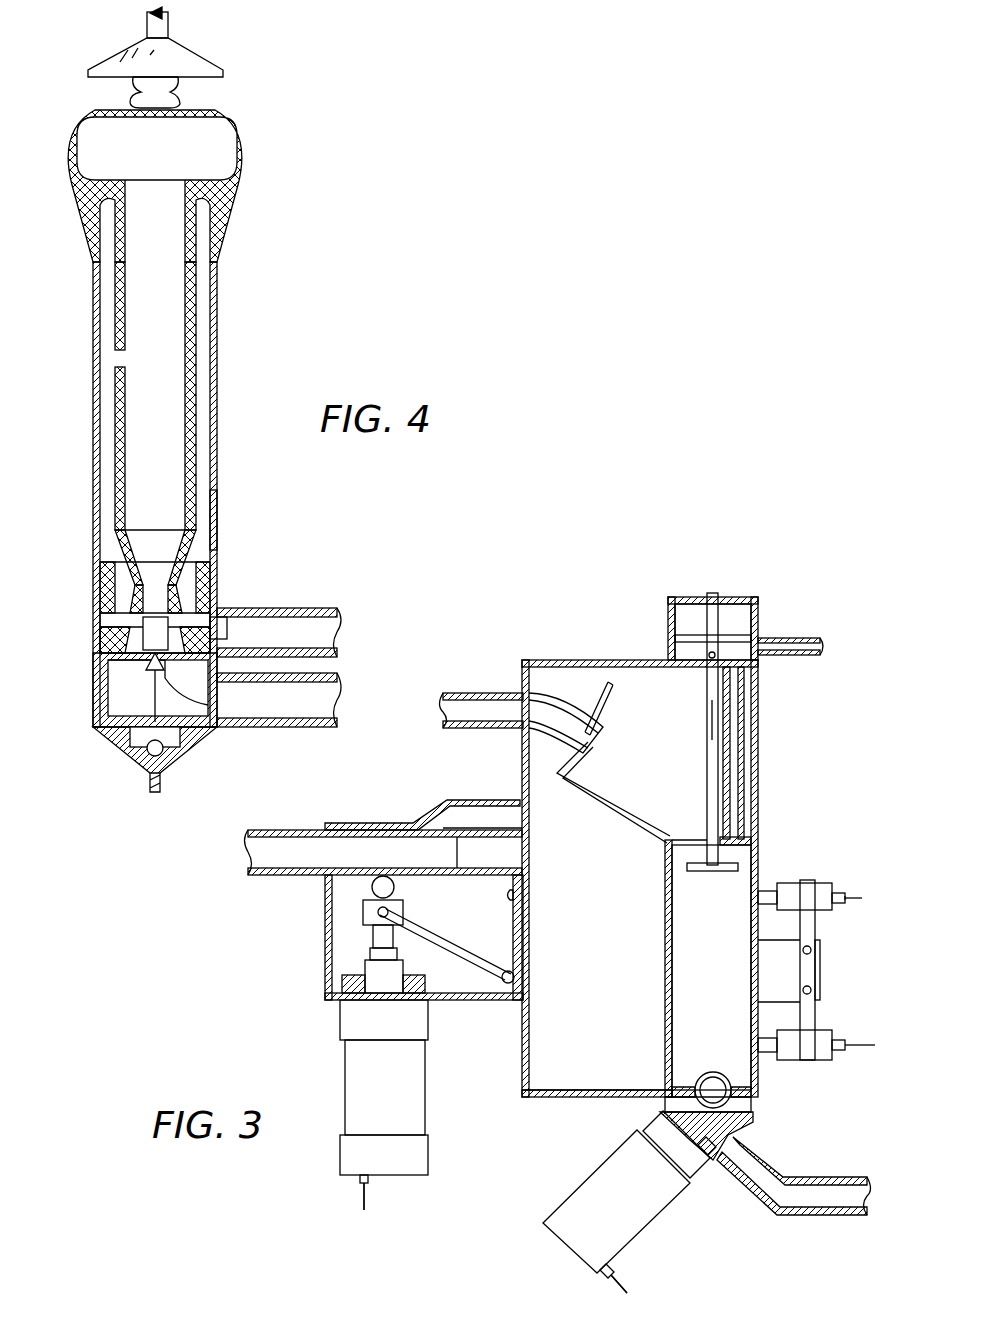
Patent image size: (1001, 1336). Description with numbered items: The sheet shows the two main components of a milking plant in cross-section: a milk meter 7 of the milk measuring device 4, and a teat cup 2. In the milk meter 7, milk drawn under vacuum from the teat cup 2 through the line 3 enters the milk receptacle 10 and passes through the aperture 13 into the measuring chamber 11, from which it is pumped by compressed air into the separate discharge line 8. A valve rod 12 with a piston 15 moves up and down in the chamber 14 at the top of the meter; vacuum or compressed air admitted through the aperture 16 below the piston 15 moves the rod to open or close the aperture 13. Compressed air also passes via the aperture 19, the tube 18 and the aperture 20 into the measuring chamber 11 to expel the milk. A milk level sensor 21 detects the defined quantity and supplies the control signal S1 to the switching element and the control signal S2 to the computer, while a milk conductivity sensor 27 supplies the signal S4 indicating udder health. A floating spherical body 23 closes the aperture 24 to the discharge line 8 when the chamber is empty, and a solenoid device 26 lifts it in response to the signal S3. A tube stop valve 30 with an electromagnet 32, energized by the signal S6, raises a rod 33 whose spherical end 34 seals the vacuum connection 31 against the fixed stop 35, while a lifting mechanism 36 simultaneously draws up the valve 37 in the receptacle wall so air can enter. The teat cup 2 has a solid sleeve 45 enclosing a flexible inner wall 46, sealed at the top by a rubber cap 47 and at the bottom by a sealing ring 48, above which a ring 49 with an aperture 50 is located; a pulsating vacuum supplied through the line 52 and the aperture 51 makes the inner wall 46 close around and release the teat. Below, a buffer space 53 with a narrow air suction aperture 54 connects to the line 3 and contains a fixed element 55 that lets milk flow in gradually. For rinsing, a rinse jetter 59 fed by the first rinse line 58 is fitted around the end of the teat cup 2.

In FIG. 4, the teat cup 2 is at (216, 362).
In FIG. 4, the line 3 is at (318, 708).
In FIG. 3, the line 3 is at (474, 705).
In FIG. 3, the milk measuring device 4 is at (572, 650).
In FIG. 3, the milk meter 7 is at (556, 1103).
In FIG. 3, the separate discharge line 8 is at (840, 1187).
In FIG. 3, the milk receptacle 10 is at (540, 1060).
In FIG. 3, the measuring chamber 11 is at (676, 976).
In FIG. 3, the valve rod 12 is at (706, 697).
In FIG. 3, the aperture 13 is at (702, 838).
In FIG. 3, the chamber 14 is at (688, 610).
In FIG. 3, the piston 15 is at (676, 626).
In FIG. 3, the aperture 16 is at (780, 638).
In FIG. 3, the tube 18 is at (741, 767).
In FIG. 3, the aperture 19 is at (740, 633).
In FIG. 3, the aperture 20 is at (742, 855).
In FIG. 3, the milk level sensor 21 is at (822, 882).
In FIG. 3, the spherical body 23 is at (703, 1073).
In FIG. 3, the aperture 24 is at (748, 1139).
In FIG. 3, the solenoid device 26 is at (580, 1192).
In FIG. 3, the milk conductivity sensor 27 is at (828, 1033).
In FIG. 3, the tube stop valve 30 is at (337, 972).
In FIG. 3, the vacuum connection 31 is at (282, 860).
In FIG. 3, the electromagnet 32 is at (410, 1113).
In FIG. 3, the rod 33 is at (372, 938).
In FIG. 3, the spherical end 34 is at (397, 888).
In FIG. 3, the fixed stop 35 is at (395, 797).
In FIG. 3, the lifting mechanism 36 is at (447, 945).
In FIG. 3, the valve 37 is at (527, 956).
In FIG. 4, the sleeve 45 is at (217, 514).
In FIG. 4, the inner wall 46 is at (193, 481).
In FIG. 4, the rubber cap 47 is at (247, 155).
In FIG. 4, the sealing ring 48 is at (108, 640).
In FIG. 4, the ring 49 is at (210, 590).
In FIG. 4, the aperture 50 is at (110, 600).
In FIG. 4, the aperture 51 is at (248, 615).
In FIG. 4, the line 52 is at (318, 631).
In FIG. 4, the buffer space 53 is at (122, 752).
In FIG. 4, the air suction aperture 54 is at (125, 685).
In FIG. 4, the fixed element 55 is at (158, 662).
In FIG. 4, the first rinse line 58 is at (146, 16).
In FIG. 4, the rinse jetter 59 is at (225, 73).
In FIG. 3, the control signal S1 is at (873, 898).
In FIG. 3, the control signal S2 is at (887, 898).
In FIG. 3, the control signal S3 is at (638, 1290).
In FIG. 3, the control signal S4 is at (876, 1045).
In FIG. 3, the control signal S6 is at (349, 1213).